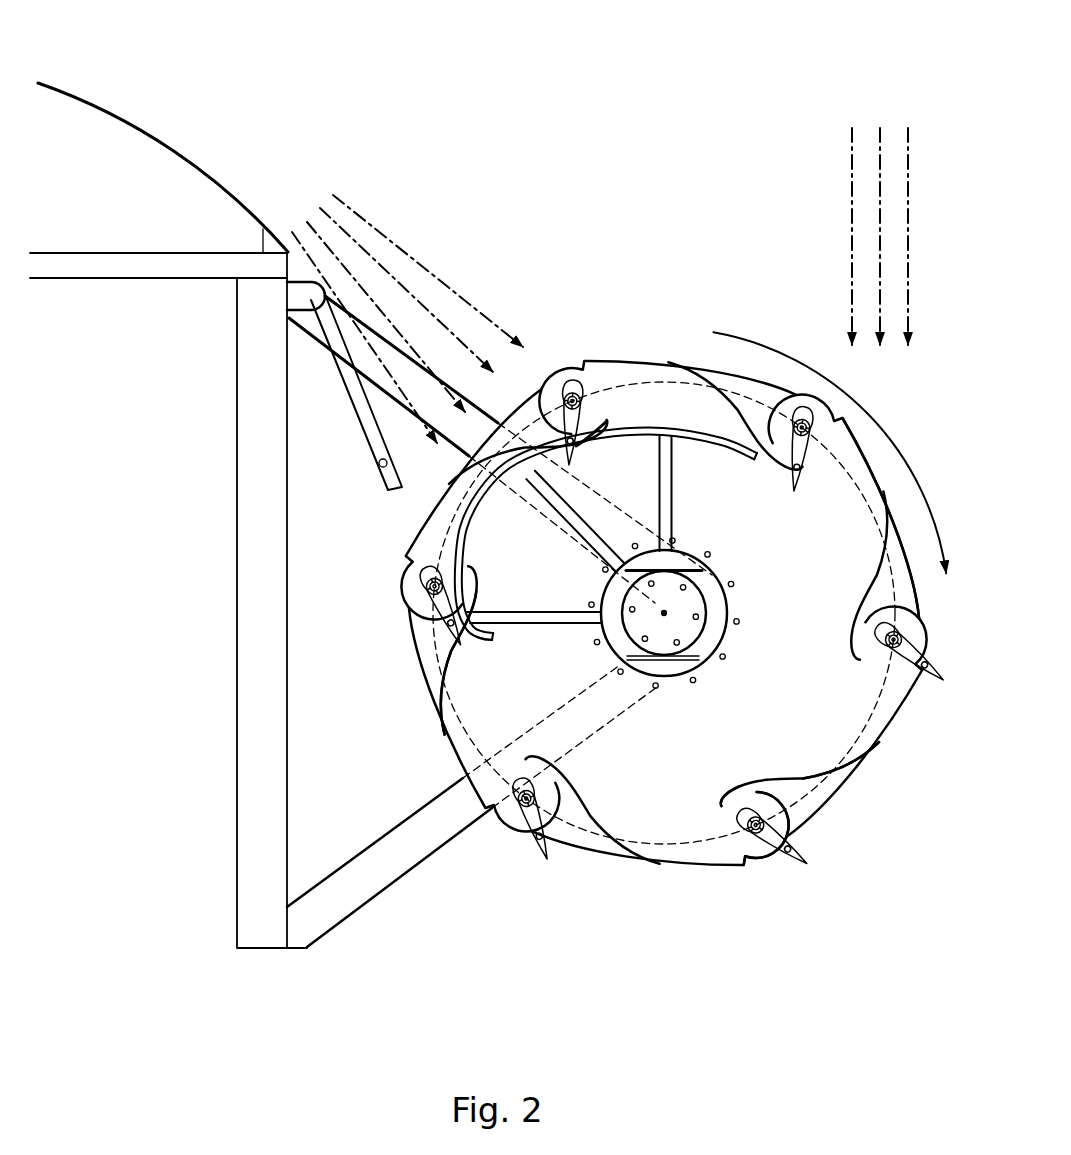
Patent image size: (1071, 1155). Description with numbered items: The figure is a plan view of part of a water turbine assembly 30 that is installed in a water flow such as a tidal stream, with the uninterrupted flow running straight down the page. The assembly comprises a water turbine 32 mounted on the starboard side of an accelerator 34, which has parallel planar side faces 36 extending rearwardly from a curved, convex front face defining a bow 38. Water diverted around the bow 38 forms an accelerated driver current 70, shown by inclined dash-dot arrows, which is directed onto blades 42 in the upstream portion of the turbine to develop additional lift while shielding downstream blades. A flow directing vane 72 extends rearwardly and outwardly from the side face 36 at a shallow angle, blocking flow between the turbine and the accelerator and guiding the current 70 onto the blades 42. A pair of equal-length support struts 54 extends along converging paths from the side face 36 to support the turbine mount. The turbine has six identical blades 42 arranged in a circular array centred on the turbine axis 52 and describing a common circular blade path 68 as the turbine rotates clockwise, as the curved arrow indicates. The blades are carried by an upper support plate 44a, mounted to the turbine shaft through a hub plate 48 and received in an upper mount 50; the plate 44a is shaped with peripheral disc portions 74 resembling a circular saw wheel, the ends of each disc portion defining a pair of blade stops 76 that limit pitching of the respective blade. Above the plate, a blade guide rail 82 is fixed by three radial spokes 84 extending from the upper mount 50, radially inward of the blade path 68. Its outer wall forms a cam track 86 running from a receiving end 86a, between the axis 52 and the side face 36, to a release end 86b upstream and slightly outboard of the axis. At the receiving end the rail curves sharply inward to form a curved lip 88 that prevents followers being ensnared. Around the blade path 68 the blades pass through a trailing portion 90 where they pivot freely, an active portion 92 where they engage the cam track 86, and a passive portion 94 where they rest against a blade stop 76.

The water turbine assembly 30 is at (614, 86).
The water turbine 32 is at (641, 303).
The accelerator 34 is at (266, 172).
The side face 36 is at (288, 806).
The bow 38 is at (104, 105).
The blades 42 is at (546, 853).
The upper support plate 44a is at (663, 613).
The hub plate 48 is at (718, 605).
The upper mount 50 is at (669, 664).
The turbine axis 52 is at (668, 616).
The support struts 54 is at (432, 495).
The blade path 68 is at (824, 780).
The accelerated driver current 70 is at (472, 266).
The flow directing vane 72 is at (366, 430).
The disc portion 74 is at (758, 845).
The blade stops 76 is at (722, 800).
The blade guide rail 82 is at (705, 447).
The radial spokes 84 is at (532, 620).
The cam track 86 is at (653, 424).
The receiving end 86a is at (480, 660).
The release end 86b is at (765, 465).
The curved lip 88 is at (455, 643).
The trailing portion 90 is at (526, 909).
The active portion 92 is at (565, 338).
The passive portion 94 is at (906, 724).